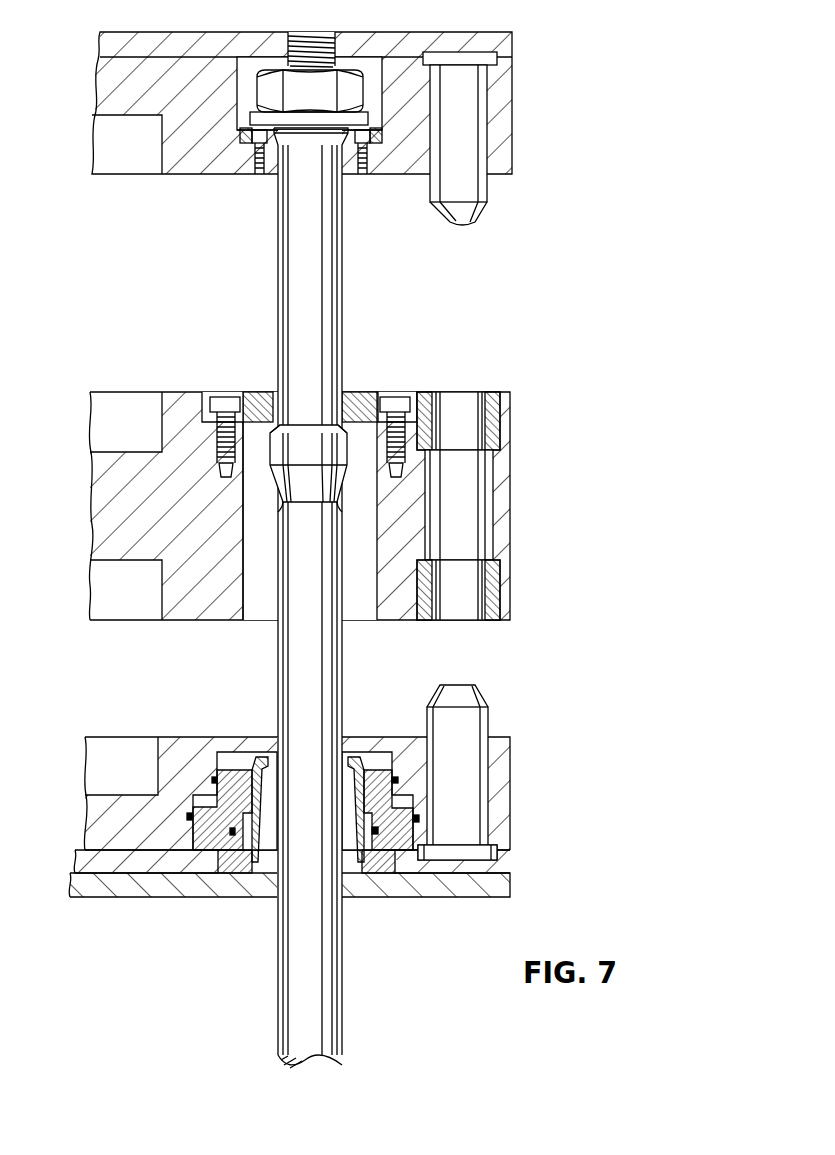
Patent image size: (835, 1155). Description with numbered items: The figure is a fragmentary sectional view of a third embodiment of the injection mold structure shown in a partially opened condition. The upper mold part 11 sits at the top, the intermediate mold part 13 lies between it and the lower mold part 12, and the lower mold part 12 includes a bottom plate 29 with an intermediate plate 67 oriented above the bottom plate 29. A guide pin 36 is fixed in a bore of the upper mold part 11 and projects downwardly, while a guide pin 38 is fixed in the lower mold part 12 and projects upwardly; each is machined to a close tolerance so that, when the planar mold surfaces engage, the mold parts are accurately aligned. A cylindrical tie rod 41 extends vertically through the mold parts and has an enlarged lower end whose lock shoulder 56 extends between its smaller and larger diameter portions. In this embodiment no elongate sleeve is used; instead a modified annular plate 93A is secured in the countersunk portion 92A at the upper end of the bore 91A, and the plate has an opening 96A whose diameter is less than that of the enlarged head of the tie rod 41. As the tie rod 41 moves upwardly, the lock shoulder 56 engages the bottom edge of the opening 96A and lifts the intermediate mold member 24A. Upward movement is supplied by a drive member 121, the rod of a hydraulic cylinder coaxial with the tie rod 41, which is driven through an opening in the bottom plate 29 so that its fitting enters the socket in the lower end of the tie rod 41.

The upper mold part 11 is at (510, 107).
The guide pin 36 is at (480, 189).
The tie rod 41 is at (311, 591).
The countersunk portion 92A is at (212, 397).
The opening 96A is at (276, 397).
The lock shoulder 56 is at (300, 425).
The modified annular plate 93A is at (357, 392).
The intermediate mold part 13 is at (514, 440).
The intermediate mold member 24A is at (502, 478).
The bore 91A is at (245, 552).
The guide pin 38 is at (480, 726).
The lower mold part 12 is at (513, 778).
The intermediate plate 67 is at (498, 868).
The bottom plate 29 is at (499, 887).
The drive member 121 is at (295, 1018).